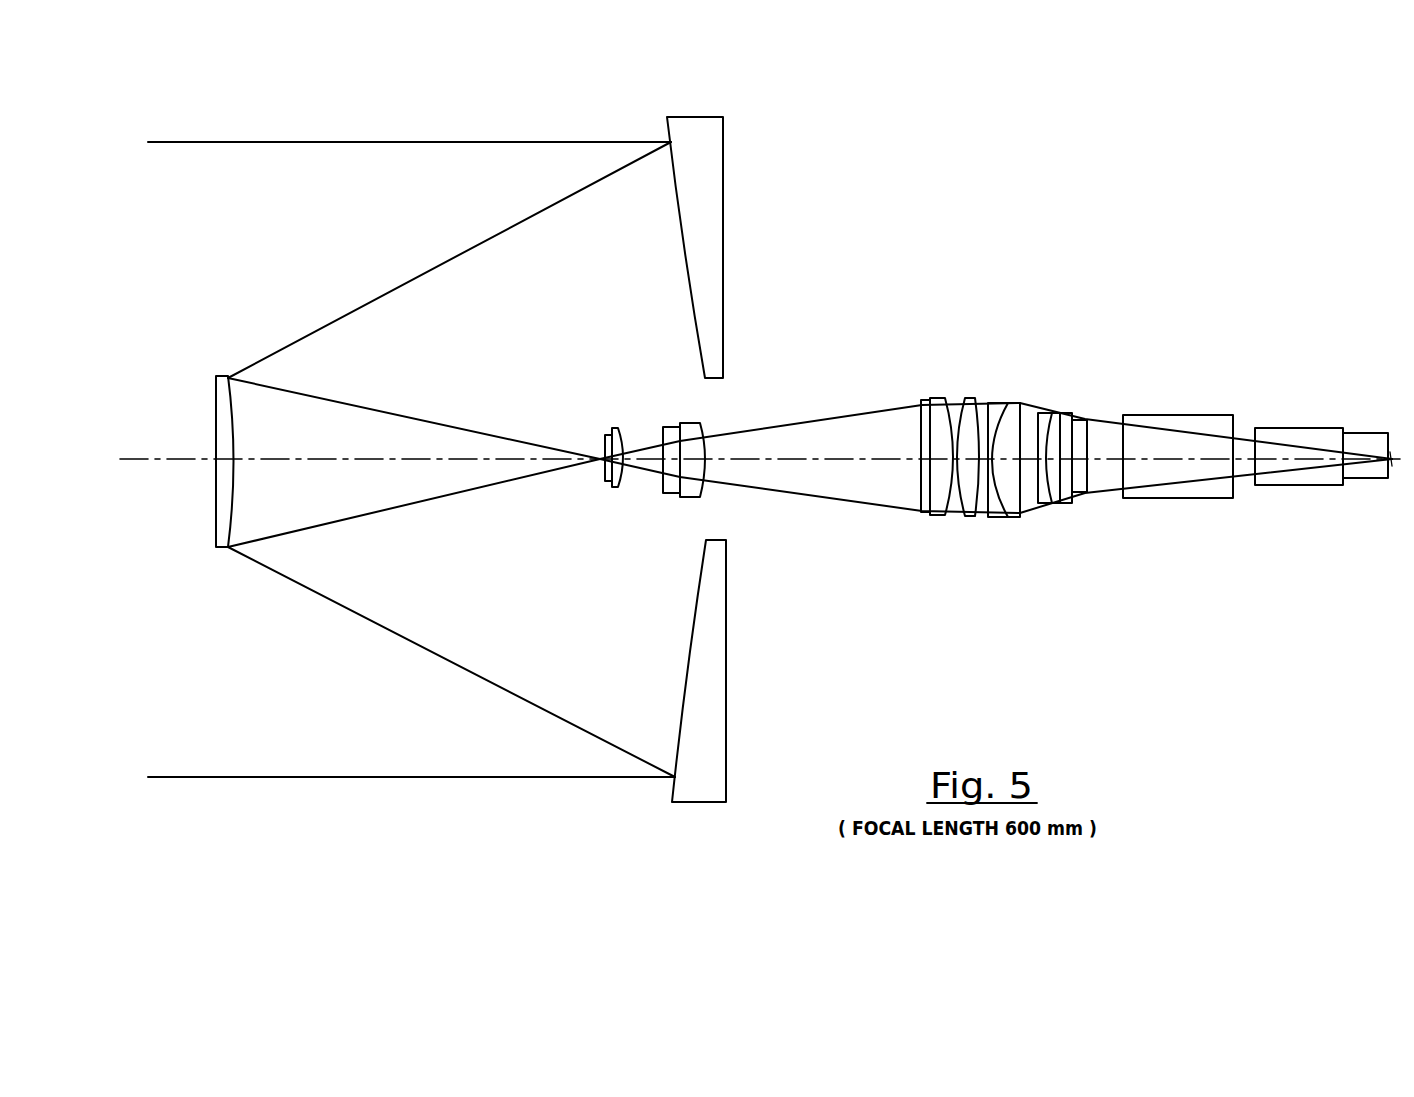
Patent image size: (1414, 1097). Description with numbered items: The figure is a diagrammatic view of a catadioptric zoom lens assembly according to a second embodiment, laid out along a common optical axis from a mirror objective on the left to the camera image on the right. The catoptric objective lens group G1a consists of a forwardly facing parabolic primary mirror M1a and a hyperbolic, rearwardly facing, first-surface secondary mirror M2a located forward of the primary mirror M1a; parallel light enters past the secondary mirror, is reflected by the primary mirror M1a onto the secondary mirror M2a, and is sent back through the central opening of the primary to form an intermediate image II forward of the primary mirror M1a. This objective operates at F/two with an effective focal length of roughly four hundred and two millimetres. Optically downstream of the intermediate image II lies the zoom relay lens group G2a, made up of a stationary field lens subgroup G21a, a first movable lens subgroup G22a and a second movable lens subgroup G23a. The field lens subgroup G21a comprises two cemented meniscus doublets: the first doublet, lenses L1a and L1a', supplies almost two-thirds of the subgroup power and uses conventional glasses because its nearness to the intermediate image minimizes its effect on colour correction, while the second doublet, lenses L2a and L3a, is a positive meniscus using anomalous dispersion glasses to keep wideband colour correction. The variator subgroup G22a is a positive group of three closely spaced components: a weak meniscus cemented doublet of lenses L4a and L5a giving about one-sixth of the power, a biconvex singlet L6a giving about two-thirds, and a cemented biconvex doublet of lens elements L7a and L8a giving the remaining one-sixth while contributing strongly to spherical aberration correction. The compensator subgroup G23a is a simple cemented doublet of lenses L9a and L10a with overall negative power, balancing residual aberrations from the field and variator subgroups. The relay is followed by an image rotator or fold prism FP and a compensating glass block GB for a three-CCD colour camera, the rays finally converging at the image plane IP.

The primary mirror M1a is at (680, 117).
The secondary mirror M2a is at (215, 398).
The intermediate image II is at (600, 458).
The catoptric objective lens group G1a is at (723, 862).
The zoom relay lens group G2a is at (608, 622).
The stationary field lens subgroup G21a is at (705, 406).
The first movable lens subgroup G22a is at (1021, 390).
The second movable lens subgroup G23a is at (1068, 407).
The lens L1a is at (569, 478).
The lens L1a' is at (575, 492).
The lens L2a is at (663, 494).
The lens L3a is at (695, 498).
The lens L4a is at (924, 514).
The lens L5a is at (943, 517).
The biconvex singlet lens L6a is at (972, 518).
The lens element L7a is at (999, 519).
The lens element L8a is at (1027, 516).
The lens L9a is at (1043, 504).
The lens L10a is at (1075, 500).
The image rotator (fold prism) FP is at (1232, 405).
The compensating glass block GB is at (1385, 412).
The image plane IP is at (1400, 463).